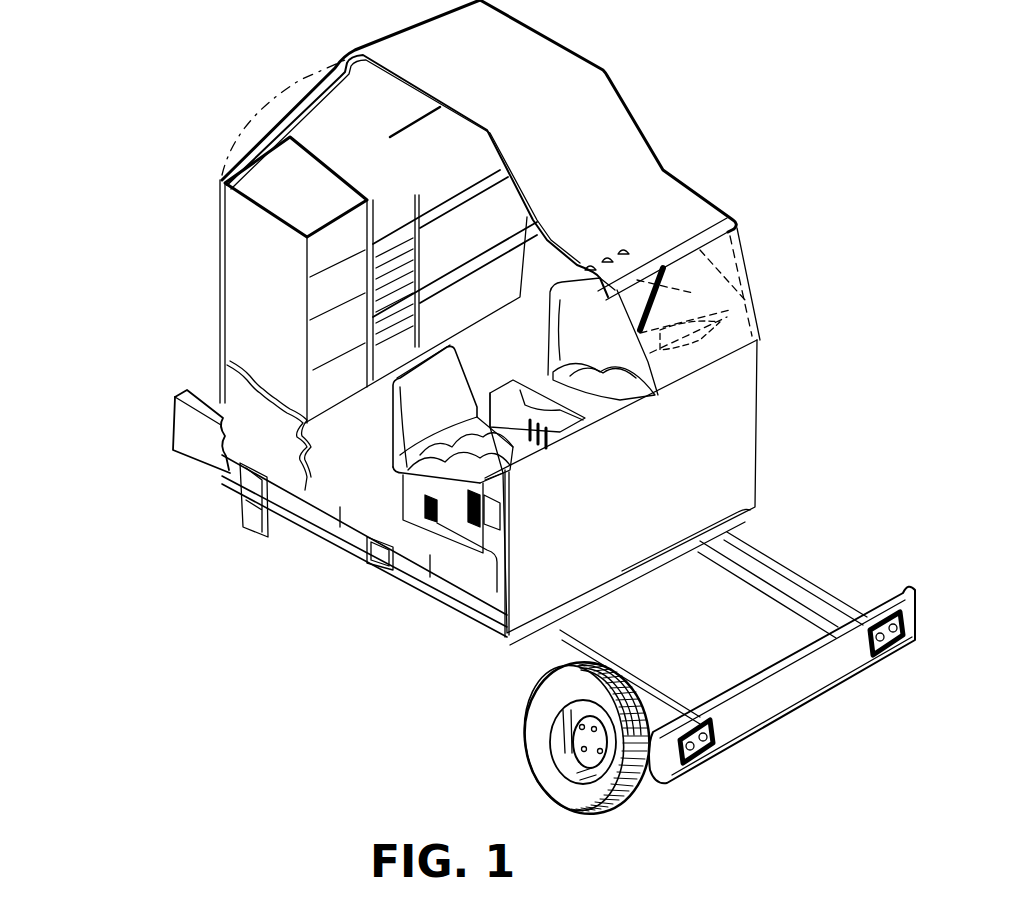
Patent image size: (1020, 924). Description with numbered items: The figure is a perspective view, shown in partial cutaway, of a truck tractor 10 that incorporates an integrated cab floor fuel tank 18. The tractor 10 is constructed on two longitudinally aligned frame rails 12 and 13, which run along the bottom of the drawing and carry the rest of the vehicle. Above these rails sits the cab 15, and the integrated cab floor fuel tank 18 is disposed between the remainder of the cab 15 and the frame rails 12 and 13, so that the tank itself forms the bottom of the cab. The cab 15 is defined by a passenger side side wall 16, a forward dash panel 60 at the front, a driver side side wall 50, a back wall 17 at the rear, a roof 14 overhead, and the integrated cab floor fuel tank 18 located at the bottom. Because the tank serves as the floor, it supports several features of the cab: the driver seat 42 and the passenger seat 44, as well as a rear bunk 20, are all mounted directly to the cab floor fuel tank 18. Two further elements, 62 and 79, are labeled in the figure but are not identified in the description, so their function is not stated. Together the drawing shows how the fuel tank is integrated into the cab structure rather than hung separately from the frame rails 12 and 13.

The tractor 10 is at (247, 613).
The frame rail 12 is at (199, 439).
The frame rail 13 is at (793, 578).
The roof 14 is at (670, 200).
The cab 15 is at (643, 129).
The passenger side side wall 16 is at (500, 590).
The back wall 17 is at (337, 127).
The integrated cab floor fuel tank 18 is at (340, 543).
The rear bunk 20 is at (457, 320).
The driver seat 42 is at (578, 332).
The passenger seat 44 is at (427, 419).
The driver side side wall 50 is at (727, 313).
The forward dash panel 60 is at (737, 463).
The console 62 is at (527, 517).
The bracket 79 is at (370, 580).